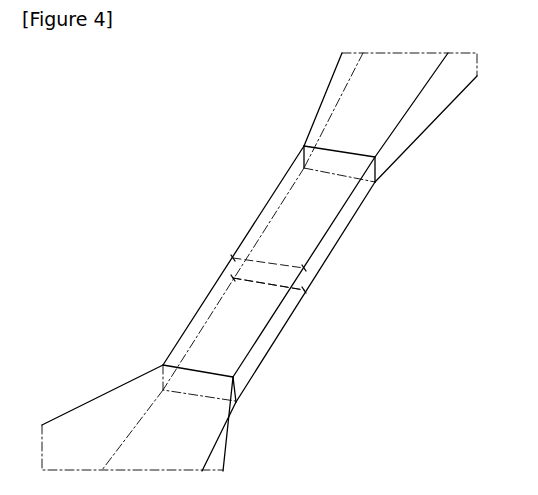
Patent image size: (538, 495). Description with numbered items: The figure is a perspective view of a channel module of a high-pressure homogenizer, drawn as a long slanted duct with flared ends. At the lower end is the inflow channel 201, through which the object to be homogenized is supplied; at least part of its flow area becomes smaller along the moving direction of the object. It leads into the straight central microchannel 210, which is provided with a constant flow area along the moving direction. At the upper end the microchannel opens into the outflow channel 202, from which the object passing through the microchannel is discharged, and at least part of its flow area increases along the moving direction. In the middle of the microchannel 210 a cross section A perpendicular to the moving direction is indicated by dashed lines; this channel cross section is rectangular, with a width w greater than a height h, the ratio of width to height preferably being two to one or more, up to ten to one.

The inflow channel 201 is at (198, 427).
The outflow channel 202 is at (433, 95).
The microchannel 210 is at (216, 248).
The cross section A is at (307, 272).
The height h is at (233, 277).
The width w is at (272, 288).